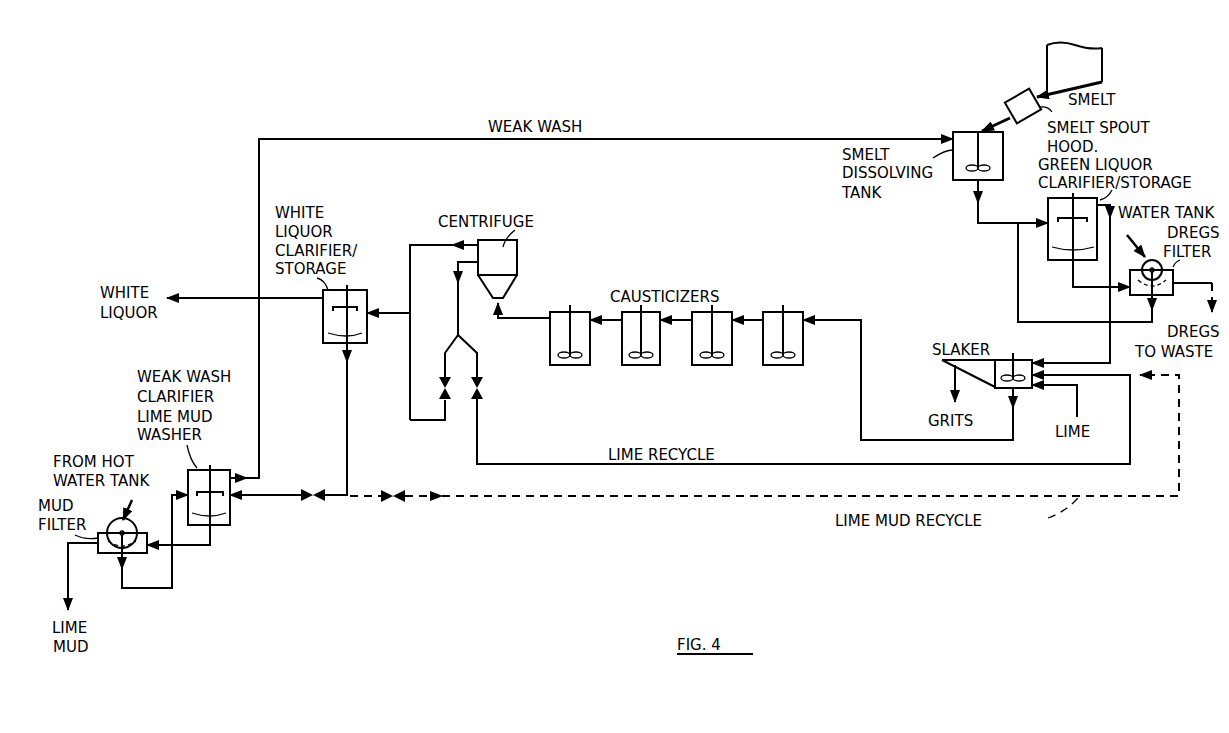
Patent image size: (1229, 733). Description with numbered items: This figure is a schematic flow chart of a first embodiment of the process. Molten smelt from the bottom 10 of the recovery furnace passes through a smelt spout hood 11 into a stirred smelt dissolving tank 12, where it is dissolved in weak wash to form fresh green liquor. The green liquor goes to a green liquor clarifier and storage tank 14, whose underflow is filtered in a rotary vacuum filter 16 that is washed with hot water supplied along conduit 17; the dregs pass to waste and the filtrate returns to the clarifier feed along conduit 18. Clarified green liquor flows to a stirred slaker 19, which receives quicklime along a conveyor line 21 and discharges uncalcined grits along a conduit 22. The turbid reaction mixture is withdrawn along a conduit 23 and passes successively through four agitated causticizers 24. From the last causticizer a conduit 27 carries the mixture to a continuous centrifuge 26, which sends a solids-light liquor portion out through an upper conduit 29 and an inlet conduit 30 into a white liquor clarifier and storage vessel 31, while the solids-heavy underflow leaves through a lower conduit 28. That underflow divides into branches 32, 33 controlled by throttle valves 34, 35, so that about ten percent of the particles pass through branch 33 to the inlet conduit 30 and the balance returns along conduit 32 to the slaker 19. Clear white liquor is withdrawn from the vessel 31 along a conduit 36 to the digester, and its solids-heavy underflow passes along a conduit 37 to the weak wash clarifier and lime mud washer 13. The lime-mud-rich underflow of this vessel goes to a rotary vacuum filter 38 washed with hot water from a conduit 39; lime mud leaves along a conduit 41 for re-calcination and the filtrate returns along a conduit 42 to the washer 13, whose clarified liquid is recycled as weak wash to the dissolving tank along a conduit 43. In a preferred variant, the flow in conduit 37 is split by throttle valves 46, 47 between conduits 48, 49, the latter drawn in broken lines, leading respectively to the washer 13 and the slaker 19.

The bottom of the recovery furnace 10 is at (1103, 58).
The smelt spout hood 11 is at (1017, 95).
The smelt dissolving tank 12 is at (1005, 157).
The weak wash clarifier and lime mud washer 13 is at (220, 468).
The green liquor clarifier and storage tank 14 is at (1048, 207).
The rotary vacuum filter 16 is at (1178, 273).
The conduit 17 is at (1138, 227).
The conduit 18 is at (1018, 278).
The slaker 19 is at (940, 362).
The conveyor line 21 is at (1073, 403).
The conduit 22 is at (950, 378).
The conduit 23 is at (835, 318).
The causticizers 24 is at (562, 366).
The continuous centrifuge 26 is at (520, 257).
The conduit 27 is at (537, 322).
The lower conduit 28 is at (458, 317).
The upper conduit 29 is at (423, 240).
The inlet conduit 30 is at (395, 322).
The white liquor clarifier and storage vessel 31 is at (368, 297).
The branch conduit 32 is at (483, 432).
The branch conduit 33 is at (427, 422).
The throttle valve 34 is at (483, 390).
The throttle valve 35 is at (440, 390).
The conduit 36 is at (208, 297).
The conduit 37 is at (343, 422).
The rotary vacuum filter 38 is at (117, 520).
The conduit 39 is at (143, 498).
The conduit 41 is at (72, 570).
The conduit 42 is at (172, 568).
The conduit 43 is at (260, 372).
The throttle valve 46 is at (305, 498).
The throttle valve 47 is at (390, 502).
The conduit 48 is at (277, 500).
The conduit 49 is at (642, 498).